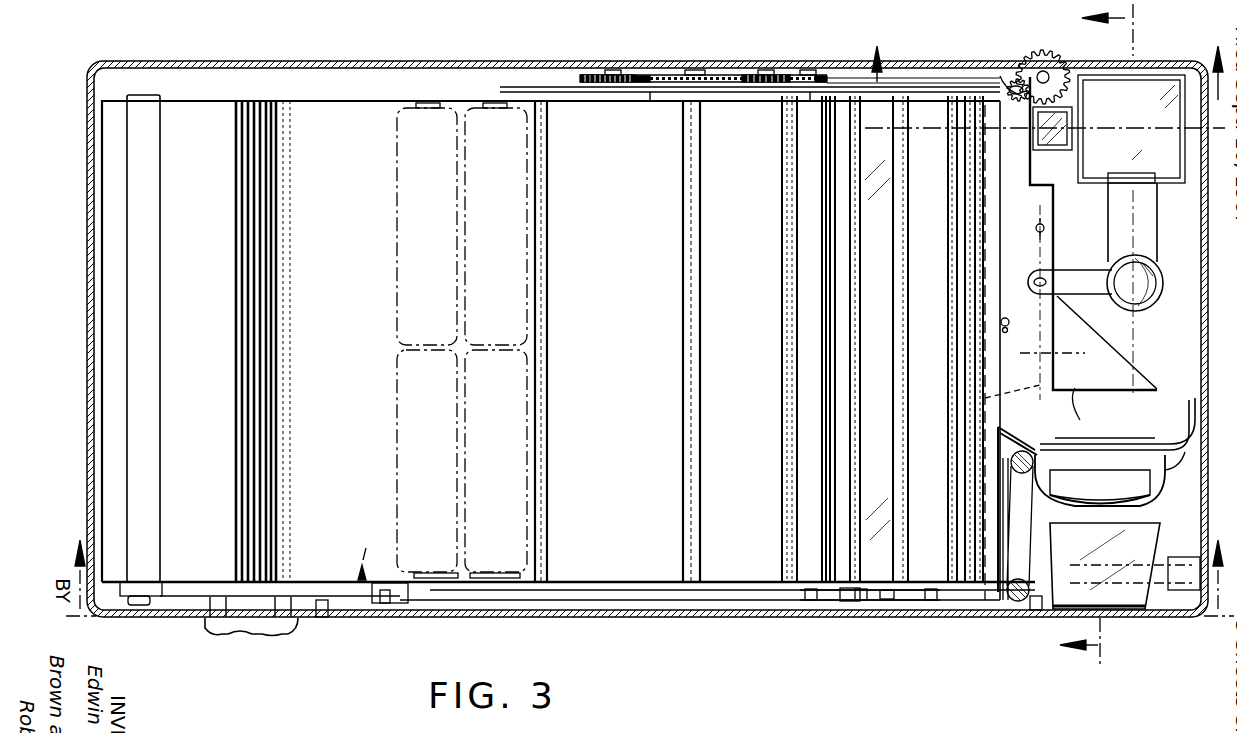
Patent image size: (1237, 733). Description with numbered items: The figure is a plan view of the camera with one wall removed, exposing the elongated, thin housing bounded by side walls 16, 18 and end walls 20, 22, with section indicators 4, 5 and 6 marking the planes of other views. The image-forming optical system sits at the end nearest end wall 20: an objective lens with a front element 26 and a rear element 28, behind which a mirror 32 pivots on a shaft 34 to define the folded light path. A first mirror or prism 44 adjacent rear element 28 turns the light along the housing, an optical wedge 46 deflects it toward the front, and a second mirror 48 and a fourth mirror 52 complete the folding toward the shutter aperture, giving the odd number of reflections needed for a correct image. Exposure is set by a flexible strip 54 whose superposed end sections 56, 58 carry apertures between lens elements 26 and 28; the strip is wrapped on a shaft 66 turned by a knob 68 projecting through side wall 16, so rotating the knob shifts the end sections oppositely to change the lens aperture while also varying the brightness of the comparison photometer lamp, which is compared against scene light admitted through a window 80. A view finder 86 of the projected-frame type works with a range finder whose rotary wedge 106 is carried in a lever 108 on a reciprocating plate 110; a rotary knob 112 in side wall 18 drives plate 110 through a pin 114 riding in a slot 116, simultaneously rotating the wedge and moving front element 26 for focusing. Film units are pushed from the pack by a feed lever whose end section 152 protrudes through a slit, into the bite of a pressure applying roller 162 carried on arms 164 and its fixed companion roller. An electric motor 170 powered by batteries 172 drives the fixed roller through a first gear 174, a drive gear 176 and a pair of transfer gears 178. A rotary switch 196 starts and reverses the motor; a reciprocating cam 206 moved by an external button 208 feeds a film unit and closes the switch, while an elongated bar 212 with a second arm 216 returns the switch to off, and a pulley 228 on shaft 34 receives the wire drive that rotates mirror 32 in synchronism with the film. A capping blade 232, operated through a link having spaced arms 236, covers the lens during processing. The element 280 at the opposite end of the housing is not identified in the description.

The section line 4- 4 is at (650, 563).
The section line 5- 5 is at (1106, 334).
The section line 6- 6 is at (1045, 106).
The side wall 16 is at (790, 618).
The side wall 18 is at (635, 72).
The end wall 20 is at (1202, 356).
The end wall 22 is at (86, 299).
The front element 26 is at (1145, 505).
The rear element 28 is at (1077, 392).
The mirror 32 is at (1128, 598).
The shaft 34 is at (1180, 592).
The first mirror or prism 44 is at (1140, 392).
The optical wedge 46 is at (1049, 369).
The second mirror 48 is at (856, 372).
The fourth mirror 52 is at (985, 250).
The flexible strip 54 is at (1026, 522).
The end section 56 is at (1160, 456).
The end section 58 is at (1145, 418).
The shaft 66 is at (1032, 612).
The knob 68 is at (1000, 622).
The window 80 is at (1065, 122).
The view finder 86 is at (1140, 100).
The rotary wedge 106 is at (1150, 300).
The lever 108 is at (1090, 285).
The plate 110 is at (1038, 214).
The rotary knob 112 is at (1033, 62).
The pin 114 is at (1048, 62).
The slot 116 is at (1000, 76).
The end section 152 is at (140, 606).
The pressure applying roller 162 is at (806, 500).
The arms 164 is at (843, 601).
The electric motor 170 is at (628, 193).
The batteries 172 is at (495, 235).
The first gear 174 is at (598, 75).
The drive gear 176 is at (845, 86).
The transfer gears 178 is at (760, 72).
The rotary switch 196 is at (369, 550).
The reciprocating cam 206 is at (322, 620).
The manually engageable button 208 is at (268, 638).
The elongated bar 212 is at (663, 598).
The second arm 216 is at (393, 605).
The pulley 228 is at (1050, 578).
The capping blade 232 is at (1175, 440).
The spaced arms 236 is at (905, 602).
The end panel 280 is at (148, 104).